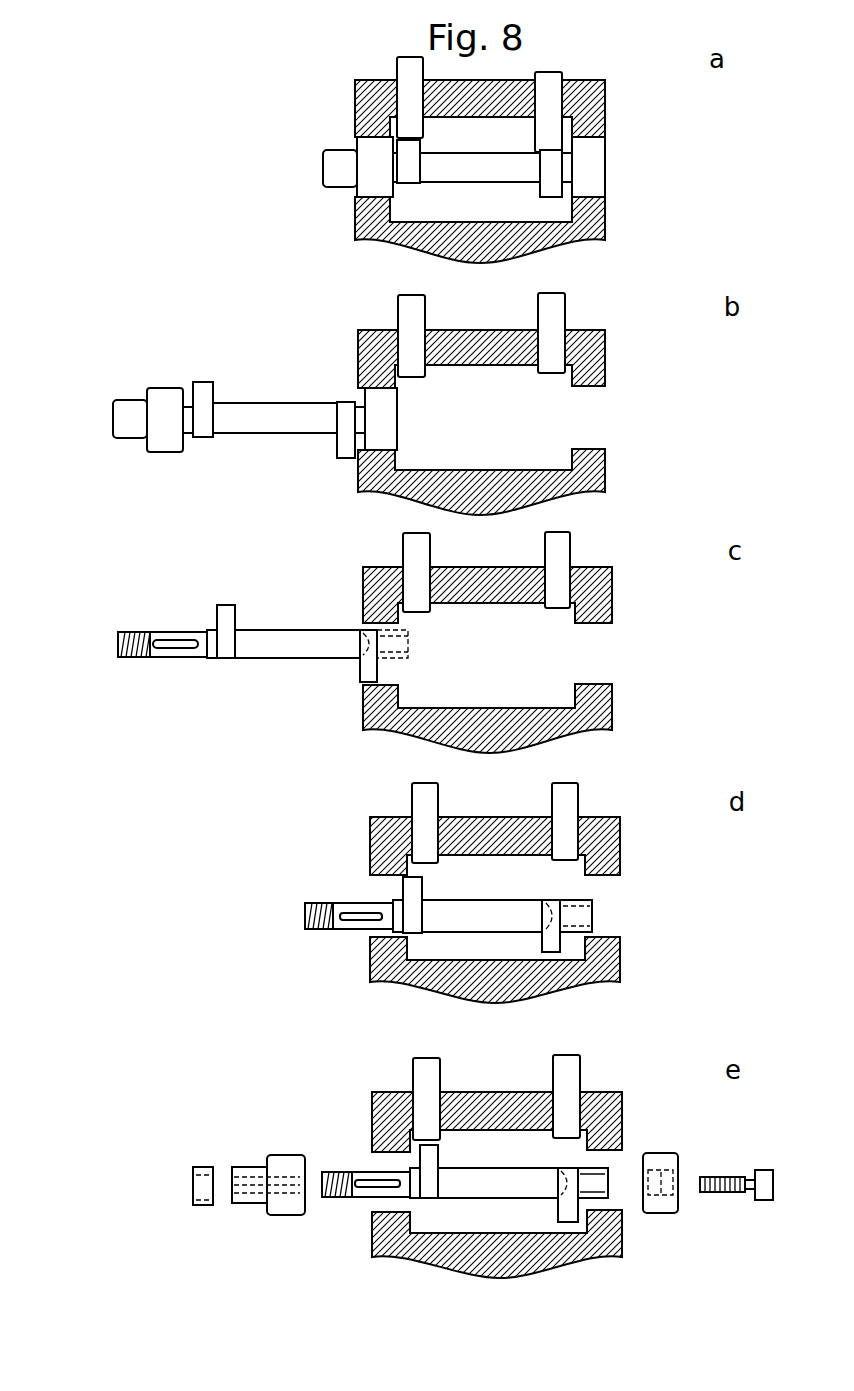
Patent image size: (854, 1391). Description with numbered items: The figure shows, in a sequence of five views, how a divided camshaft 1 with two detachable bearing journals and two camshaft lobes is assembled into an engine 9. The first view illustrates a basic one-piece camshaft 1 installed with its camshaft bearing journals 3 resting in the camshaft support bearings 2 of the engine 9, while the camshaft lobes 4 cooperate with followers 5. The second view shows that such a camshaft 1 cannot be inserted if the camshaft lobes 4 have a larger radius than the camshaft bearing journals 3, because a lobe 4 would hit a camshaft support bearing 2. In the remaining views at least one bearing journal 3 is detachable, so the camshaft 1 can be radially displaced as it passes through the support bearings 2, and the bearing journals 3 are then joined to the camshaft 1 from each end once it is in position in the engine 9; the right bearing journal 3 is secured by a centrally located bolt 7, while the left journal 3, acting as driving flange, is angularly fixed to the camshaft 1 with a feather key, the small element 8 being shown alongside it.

The camshaft 1 is at (499, 175).
The camshaft support bearing 2 is at (372, 131).
The camshaft bearing journal 3 is at (360, 190).
The camshaft lobe 4 is at (401, 170).
The follower 5 is at (403, 106).
The bolt 7 is at (765, 1185).
The washer 8 is at (207, 1195).
The engine 9 is at (604, 86).